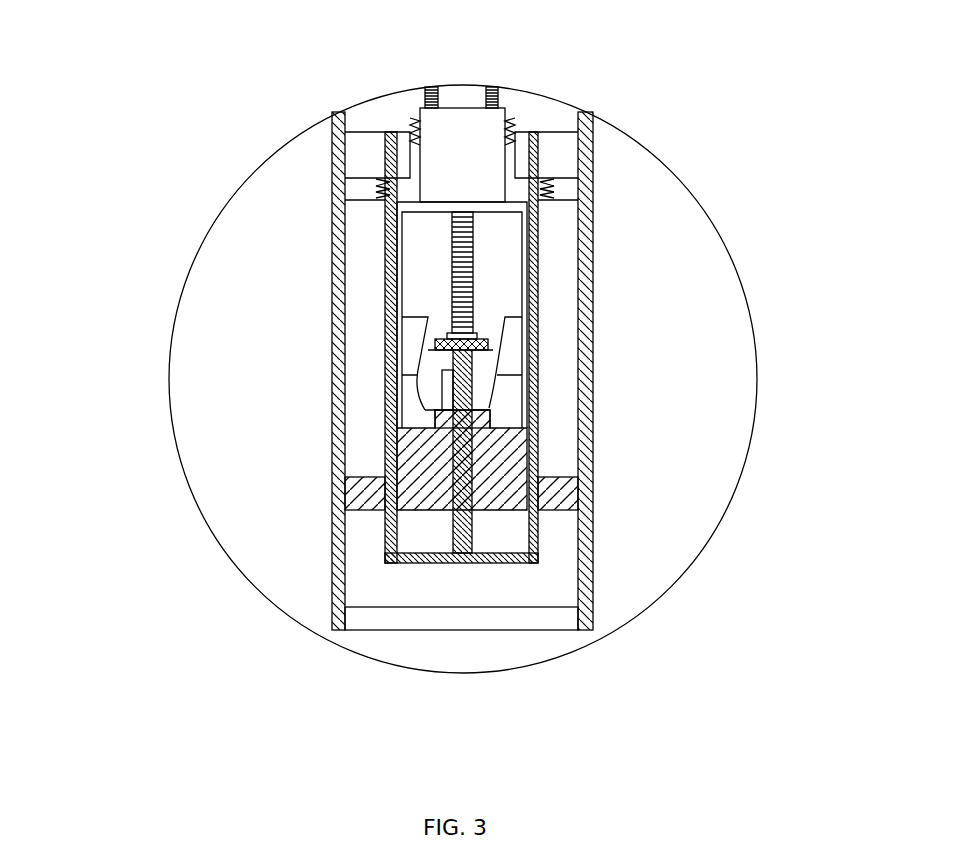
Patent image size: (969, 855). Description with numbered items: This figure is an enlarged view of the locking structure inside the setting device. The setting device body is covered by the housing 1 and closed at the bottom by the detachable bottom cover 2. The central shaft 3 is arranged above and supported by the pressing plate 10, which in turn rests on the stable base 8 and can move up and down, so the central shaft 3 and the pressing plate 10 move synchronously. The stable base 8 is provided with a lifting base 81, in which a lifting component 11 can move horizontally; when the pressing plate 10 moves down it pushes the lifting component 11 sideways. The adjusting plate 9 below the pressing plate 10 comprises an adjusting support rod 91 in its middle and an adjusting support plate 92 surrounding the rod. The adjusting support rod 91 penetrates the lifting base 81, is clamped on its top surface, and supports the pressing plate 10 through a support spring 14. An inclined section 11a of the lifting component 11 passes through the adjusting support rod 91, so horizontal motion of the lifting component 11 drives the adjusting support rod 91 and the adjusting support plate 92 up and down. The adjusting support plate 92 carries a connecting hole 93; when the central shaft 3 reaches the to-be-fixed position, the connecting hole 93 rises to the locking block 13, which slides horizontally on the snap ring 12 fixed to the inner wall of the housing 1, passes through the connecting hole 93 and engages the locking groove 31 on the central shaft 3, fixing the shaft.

The housing 1 is at (590, 150).
The bottom cover 2 is at (507, 630).
The central shaft 3 is at (460, 107).
The locking groove 31 is at (505, 127).
The snap ring 12 is at (370, 152).
The locking block 13 is at (362, 190).
The connecting hole 93 is at (538, 215).
The adjusting support plate 92 is at (538, 315).
The support spring 14 is at (450, 287).
The adjusting support rod 91 is at (472, 525).
The pressing plate 10 is at (410, 337).
The lifting component 11 is at (432, 397).
The inclined section 11a is at (440, 372).
The stable base 8 is at (355, 493).
The lifting base 81 is at (492, 420).
The adjusting plate 9 is at (427, 565).